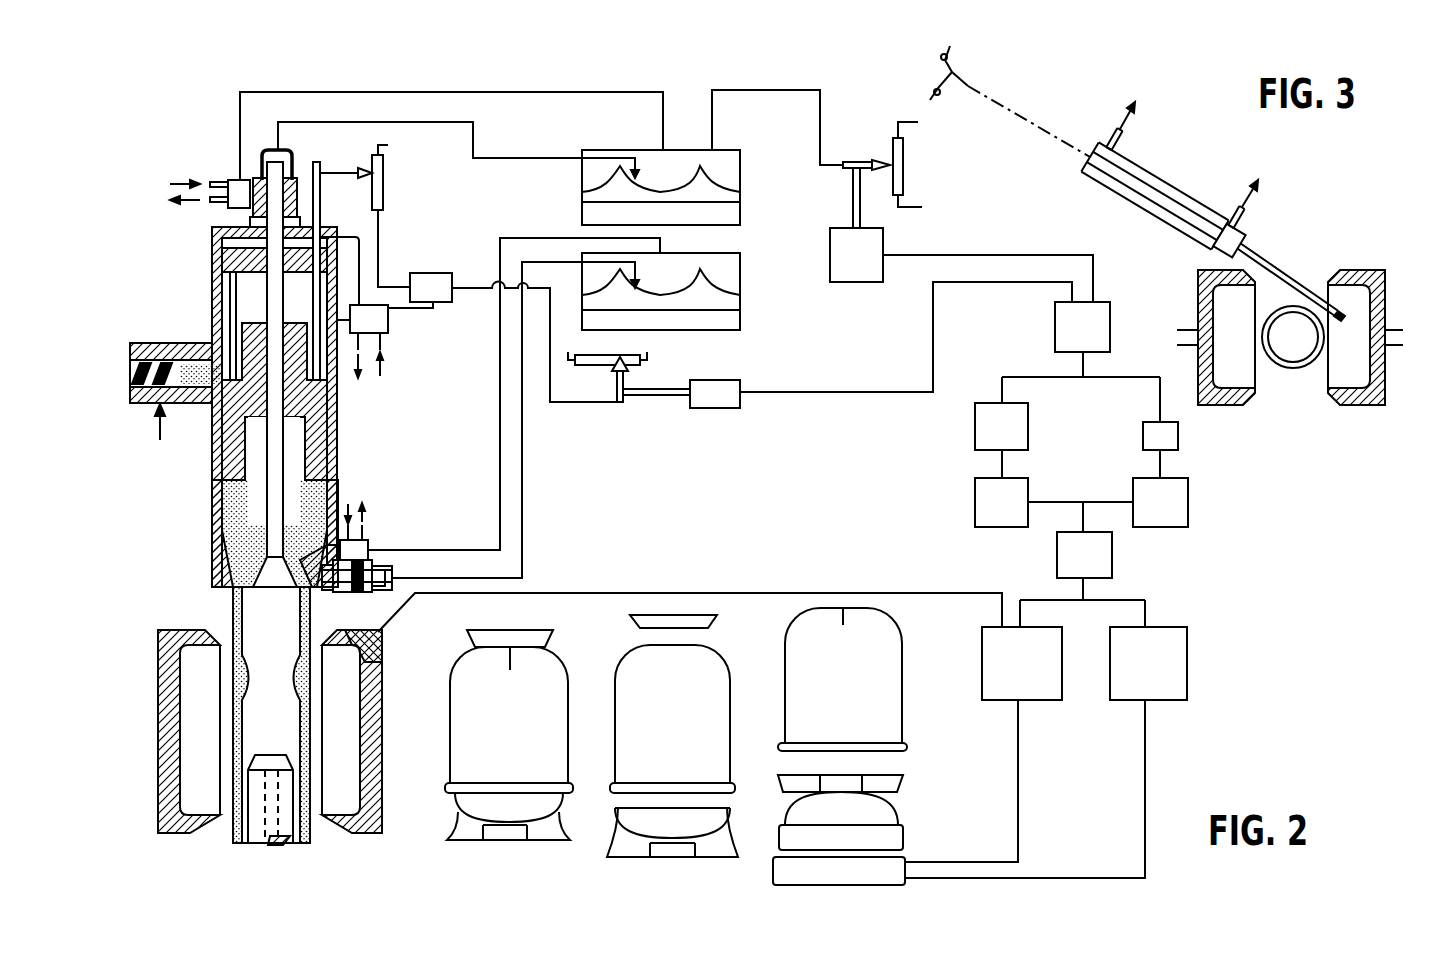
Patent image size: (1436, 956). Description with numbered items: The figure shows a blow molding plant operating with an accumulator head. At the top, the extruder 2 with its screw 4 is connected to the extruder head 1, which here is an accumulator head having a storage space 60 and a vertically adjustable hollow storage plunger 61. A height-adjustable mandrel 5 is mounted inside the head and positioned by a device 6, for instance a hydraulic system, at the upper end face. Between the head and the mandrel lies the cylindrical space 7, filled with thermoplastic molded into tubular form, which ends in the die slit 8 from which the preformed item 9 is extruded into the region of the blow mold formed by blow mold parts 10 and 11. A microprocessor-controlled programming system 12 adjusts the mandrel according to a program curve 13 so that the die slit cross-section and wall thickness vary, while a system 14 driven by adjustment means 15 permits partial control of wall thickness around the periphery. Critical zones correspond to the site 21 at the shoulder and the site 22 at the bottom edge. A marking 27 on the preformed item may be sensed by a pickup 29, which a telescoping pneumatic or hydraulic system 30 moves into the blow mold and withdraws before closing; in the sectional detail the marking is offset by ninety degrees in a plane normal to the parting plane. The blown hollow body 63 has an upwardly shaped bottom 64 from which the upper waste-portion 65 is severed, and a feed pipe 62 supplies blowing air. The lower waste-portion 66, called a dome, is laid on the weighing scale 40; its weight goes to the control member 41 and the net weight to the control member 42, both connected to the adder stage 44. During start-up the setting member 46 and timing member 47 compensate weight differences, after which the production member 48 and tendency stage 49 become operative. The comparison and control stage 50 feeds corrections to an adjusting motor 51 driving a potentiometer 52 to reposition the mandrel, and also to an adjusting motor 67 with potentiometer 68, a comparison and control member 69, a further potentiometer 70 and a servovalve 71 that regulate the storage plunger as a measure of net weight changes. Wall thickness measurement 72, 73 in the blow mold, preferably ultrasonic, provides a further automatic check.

In FIG. 2, the extruder head 1 is at (212, 476).
In FIG. 2, the extruder 2 is at (160, 439).
In FIG. 2, the screw 4 is at (158, 343).
In FIG. 2, the mandrel 5 is at (270, 583).
In FIG. 2, the device 6 is at (298, 175).
In FIG. 2, the cylindrical space 7 is at (312, 432).
In FIG. 2, the die slit 8 is at (232, 577).
In FIG. 2, the preformed item 9 is at (245, 640).
In FIG. 3, the preformed item 9 is at (1293, 368).
In FIG. 2, the blow mold part 10 is at (165, 680).
In FIG. 3, the blow mold part 10 is at (1228, 405).
In FIG. 2, the blow mold part 11 is at (377, 723).
In FIG. 3, the blow mold part 11 is at (1360, 405).
In FIG. 2, the programming system 12 is at (582, 293).
In FIG. 2, the program curve 13 is at (656, 191).
In FIG. 2, the system 14 is at (313, 595).
In FIG. 2, the adjustment means 15 is at (385, 565).
In FIG. 2, the site 21 is at (190, 650).
In FIG. 2, the site 22 is at (186, 813).
In FIG. 3, the marking 27 is at (1323, 337).
In FIG. 3, the pickup 29 is at (1342, 270).
In FIG. 3, the telescoping pneumatic or hydraulic system 30 is at (1177, 190).
In FIG. 2, the weighing scale 40 is at (895, 867).
In FIG. 2, the control member 41 is at (1038, 690).
In FIG. 2, the control member 42 is at (1173, 668).
In FIG. 2, the adder stage 44 is at (1105, 563).
In FIG. 2, the setting member 46 is at (1178, 514).
In FIG. 2, the timing member 47 is at (1150, 437).
In FIG. 2, the production member 48 is at (983, 502).
In FIG. 2, the tendency stage 49 is at (983, 428).
In FIG. 2, the comparison and control stage 50 is at (1055, 327).
In FIG. 2, the adjusting motor 51 is at (855, 272).
In FIG. 2, the potentiometer 52 is at (903, 172).
In FIG. 2, the storage space 60 is at (240, 512).
In FIG. 2, the hollow storage plunger 61 is at (318, 468).
In FIG. 2, the feed pipe 62 is at (283, 845).
In FIG. 2, the hollow body 63 is at (558, 728).
In FIG. 2, the bottom 64 is at (679, 656).
In FIG. 2, the upper waste-portion 65 is at (530, 635).
In FIG. 2, the lower waste-portion 66 is at (467, 807).
In FIG. 2, the adjusting motor 67 is at (717, 400).
In FIG. 2, the potentiometer 68 is at (597, 363).
In FIG. 2, the comparison and control member 69 is at (434, 274).
In FIG. 2, the further potentiometer 70 is at (383, 188).
In FIG. 2, the servovalve 71 is at (388, 330).
In FIG. 2, the wall thickness measurement 72 is at (352, 650).
In FIG. 2, the wall thickness measurement 73 is at (367, 656).